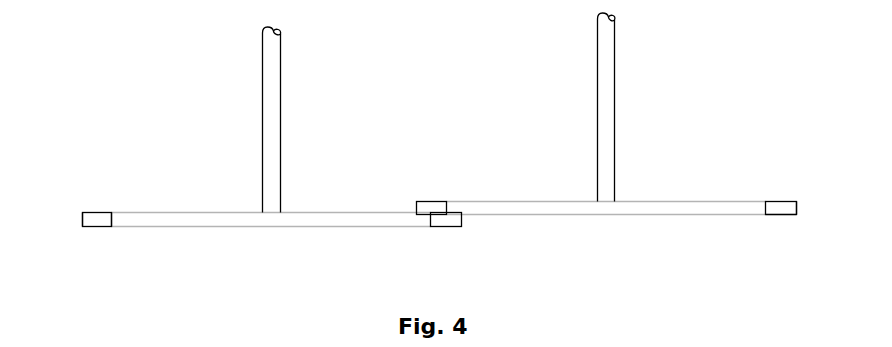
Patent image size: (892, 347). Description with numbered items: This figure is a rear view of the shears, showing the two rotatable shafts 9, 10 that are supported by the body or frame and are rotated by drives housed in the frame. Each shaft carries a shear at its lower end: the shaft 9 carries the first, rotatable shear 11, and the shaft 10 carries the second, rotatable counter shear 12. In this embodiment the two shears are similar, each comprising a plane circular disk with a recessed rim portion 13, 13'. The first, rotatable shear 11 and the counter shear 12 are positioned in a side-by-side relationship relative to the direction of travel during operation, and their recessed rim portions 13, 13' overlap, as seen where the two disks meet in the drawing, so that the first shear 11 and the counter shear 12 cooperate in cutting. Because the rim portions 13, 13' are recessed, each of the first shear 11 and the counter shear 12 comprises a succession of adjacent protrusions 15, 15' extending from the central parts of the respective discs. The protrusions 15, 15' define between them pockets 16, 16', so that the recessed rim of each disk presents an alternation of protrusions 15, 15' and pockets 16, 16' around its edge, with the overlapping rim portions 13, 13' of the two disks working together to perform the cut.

The rotatable shaft 9 is at (606, 75).
The rotatable shaft 10 is at (270, 75).
The first rotatable shear 11 is at (576, 202).
The second rotatable counter shear 12 is at (294, 212).
The recessed rim portion 13 is at (580, 166).
The recessed rim portion 13' is at (267, 224).
The protrusion 15 is at (829, 238).
The protrusion 15' is at (45, 248).
The pocket 16 is at (807, 257).
The pocket 16' is at (67, 262).